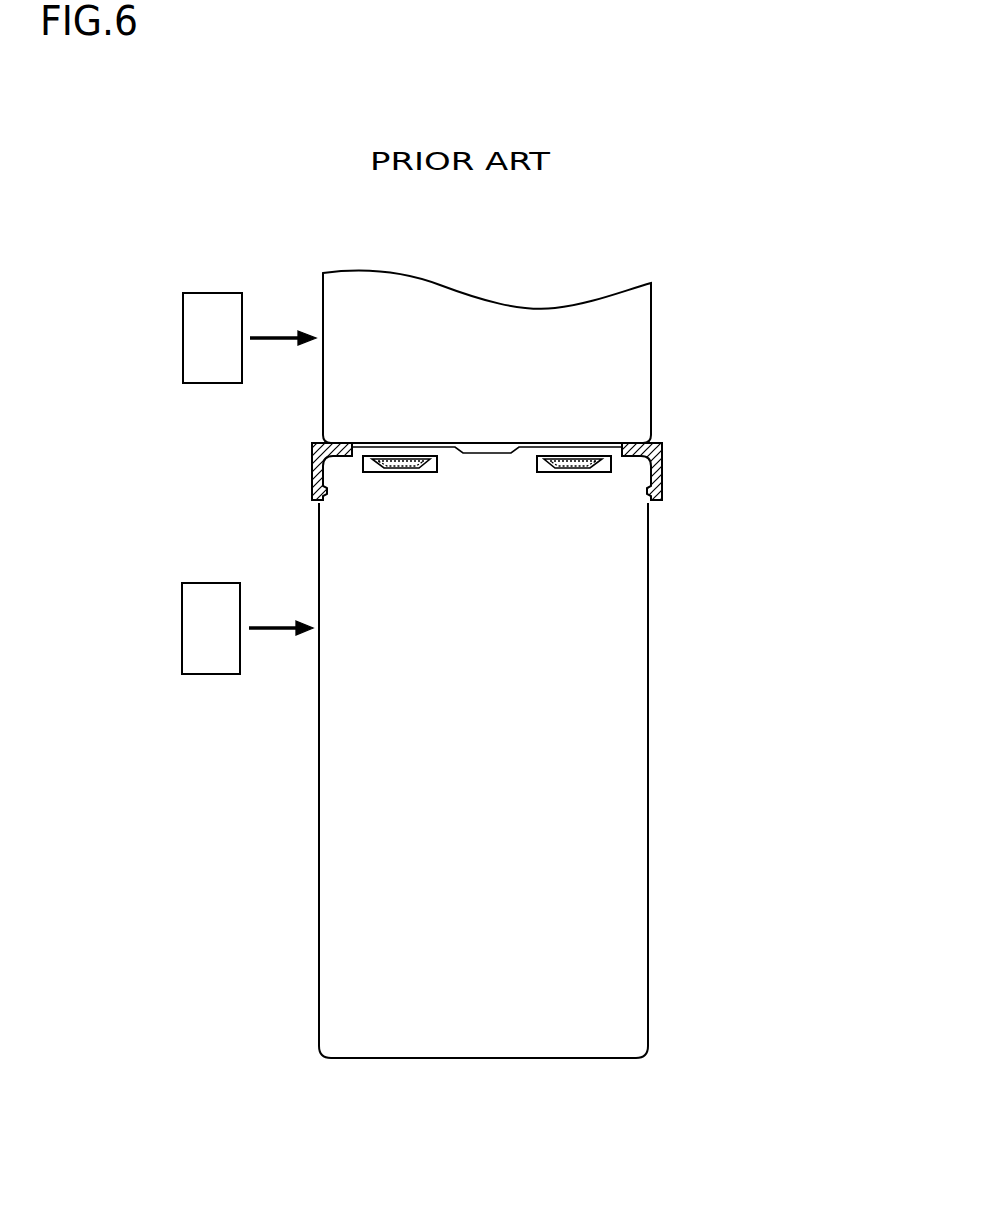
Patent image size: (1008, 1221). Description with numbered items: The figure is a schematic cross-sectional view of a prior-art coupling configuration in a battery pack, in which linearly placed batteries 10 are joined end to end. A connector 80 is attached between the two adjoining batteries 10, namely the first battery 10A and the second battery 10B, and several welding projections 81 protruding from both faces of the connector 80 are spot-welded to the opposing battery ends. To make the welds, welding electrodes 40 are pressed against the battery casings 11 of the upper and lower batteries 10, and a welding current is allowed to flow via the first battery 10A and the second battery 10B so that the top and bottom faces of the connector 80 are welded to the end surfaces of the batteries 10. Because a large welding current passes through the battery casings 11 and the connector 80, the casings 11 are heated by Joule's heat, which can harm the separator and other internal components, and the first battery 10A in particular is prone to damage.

The battery 10 is at (598, 664).
The first battery 10A is at (706, 590).
The second battery 10B is at (706, 363).
The battery casing 11 is at (323, 380).
The welding electrode 40 is at (207, 340).
The connector 80 is at (572, 444).
The welding projection 81 is at (437, 443).